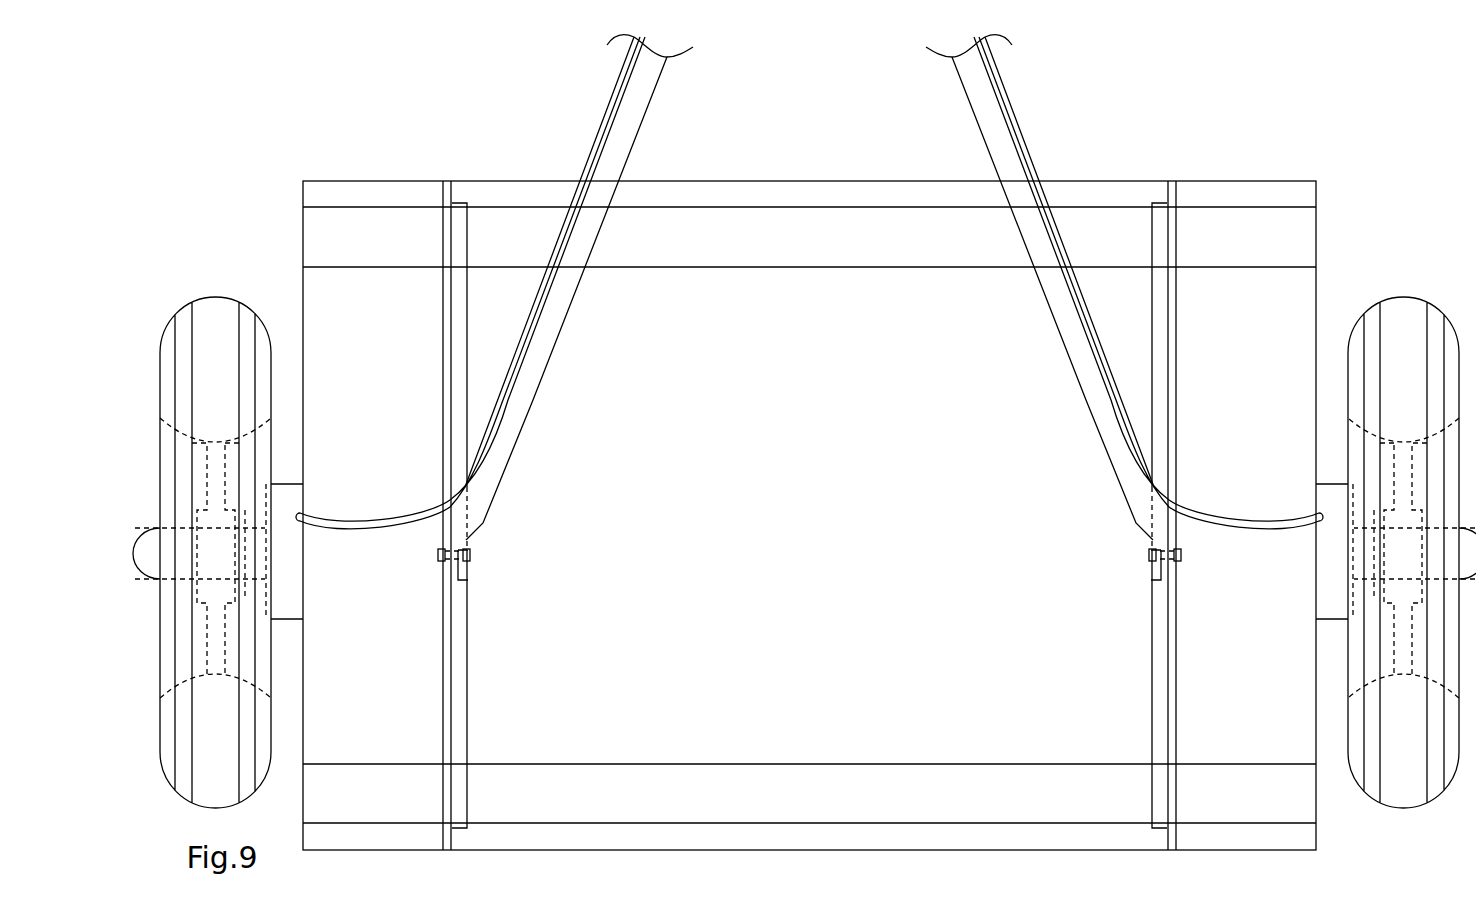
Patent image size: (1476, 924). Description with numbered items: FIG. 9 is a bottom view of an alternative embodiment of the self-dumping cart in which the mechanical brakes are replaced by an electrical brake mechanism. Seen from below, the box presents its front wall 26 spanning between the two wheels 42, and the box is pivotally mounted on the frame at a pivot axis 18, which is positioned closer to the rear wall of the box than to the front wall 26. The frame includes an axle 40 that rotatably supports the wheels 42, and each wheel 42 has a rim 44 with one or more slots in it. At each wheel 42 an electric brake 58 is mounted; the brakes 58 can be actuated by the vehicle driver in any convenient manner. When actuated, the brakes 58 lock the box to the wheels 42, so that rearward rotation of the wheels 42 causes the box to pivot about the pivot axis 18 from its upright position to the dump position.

The pivot axis 18 is at (466, 543).
The front wall 26 is at (1240, 183).
The axle 40 is at (240, 528).
The wheels 42 is at (207, 807).
The rim 44 is at (225, 460).
The electric brakes 58 is at (292, 590).